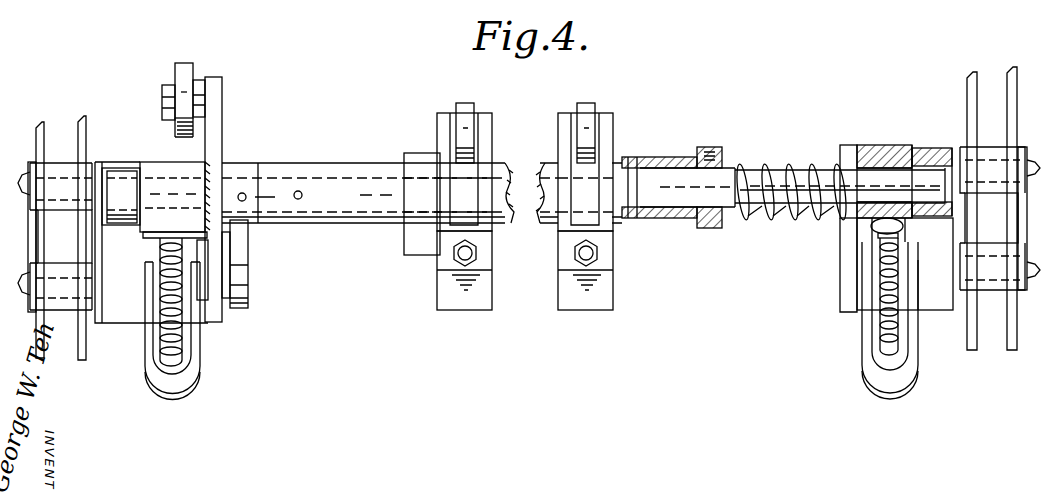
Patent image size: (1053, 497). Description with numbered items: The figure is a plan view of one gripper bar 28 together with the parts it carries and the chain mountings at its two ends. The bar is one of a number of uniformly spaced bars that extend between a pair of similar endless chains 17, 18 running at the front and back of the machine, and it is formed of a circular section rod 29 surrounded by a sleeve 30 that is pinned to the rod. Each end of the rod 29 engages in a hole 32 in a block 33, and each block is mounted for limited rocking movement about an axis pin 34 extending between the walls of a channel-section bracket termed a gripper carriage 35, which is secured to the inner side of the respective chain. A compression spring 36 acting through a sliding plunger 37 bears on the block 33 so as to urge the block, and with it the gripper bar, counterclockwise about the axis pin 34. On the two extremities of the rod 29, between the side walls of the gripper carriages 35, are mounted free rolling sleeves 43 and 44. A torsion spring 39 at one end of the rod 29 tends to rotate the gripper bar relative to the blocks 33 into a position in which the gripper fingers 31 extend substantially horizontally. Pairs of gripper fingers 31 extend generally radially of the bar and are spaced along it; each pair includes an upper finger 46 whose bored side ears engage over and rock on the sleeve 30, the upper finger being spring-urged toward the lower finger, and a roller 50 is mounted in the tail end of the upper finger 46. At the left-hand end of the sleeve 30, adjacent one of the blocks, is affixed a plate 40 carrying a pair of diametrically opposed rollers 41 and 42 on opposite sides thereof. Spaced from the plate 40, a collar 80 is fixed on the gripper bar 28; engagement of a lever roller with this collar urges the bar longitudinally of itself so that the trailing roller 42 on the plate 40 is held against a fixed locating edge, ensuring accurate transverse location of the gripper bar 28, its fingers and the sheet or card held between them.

The endless chain 17 is at (31, 246).
The endless chain 18 is at (1018, 222).
The gripper bar 28 is at (326, 183).
The rod 29 is at (725, 180).
The sleeve 30 is at (675, 161).
The gripper finger 31 is at (568, 218).
The hole 32 is at (860, 166).
The block 33 is at (159, 168).
The axis pin 34 is at (876, 152).
The gripper carriage 35 is at (853, 250).
The compression spring 36 is at (898, 289).
The sliding plunger 37 is at (880, 282).
The torsion spring 39 is at (777, 204).
The plate 40 is at (214, 140).
The roller 41 is at (187, 78).
The roller 42 is at (245, 288).
The free rolling sleeve 43 is at (114, 177).
The free rolling sleeve 44 is at (930, 150).
The upper finger 46 is at (570, 288).
The roller 50 is at (461, 125).
The collar 80 is at (414, 243).